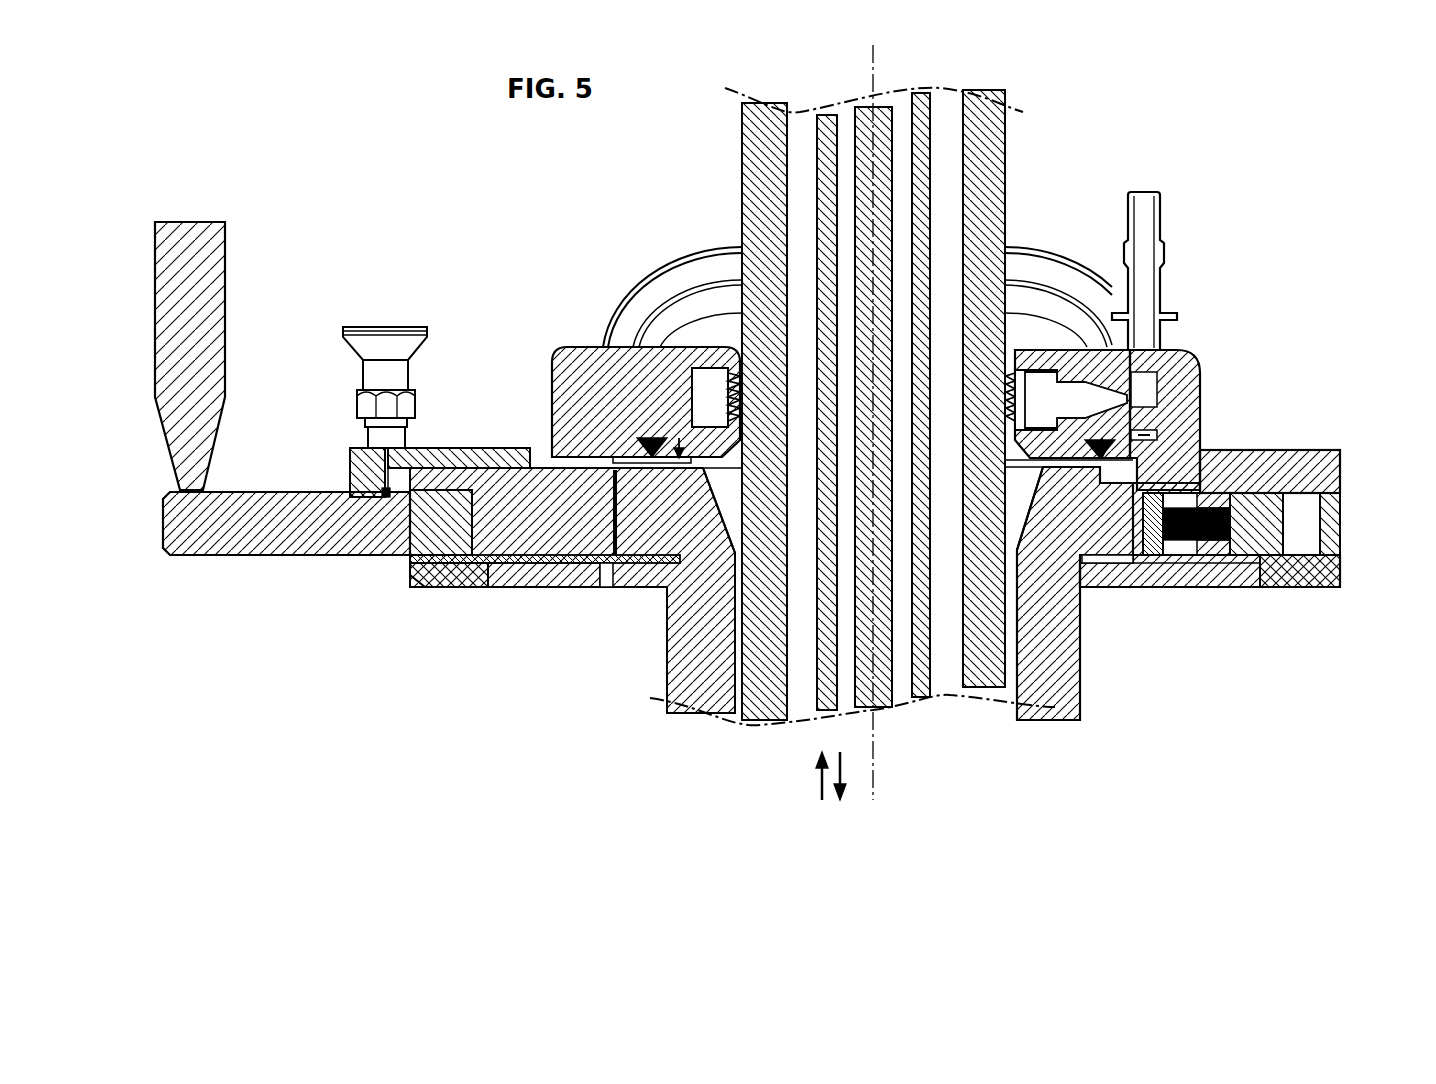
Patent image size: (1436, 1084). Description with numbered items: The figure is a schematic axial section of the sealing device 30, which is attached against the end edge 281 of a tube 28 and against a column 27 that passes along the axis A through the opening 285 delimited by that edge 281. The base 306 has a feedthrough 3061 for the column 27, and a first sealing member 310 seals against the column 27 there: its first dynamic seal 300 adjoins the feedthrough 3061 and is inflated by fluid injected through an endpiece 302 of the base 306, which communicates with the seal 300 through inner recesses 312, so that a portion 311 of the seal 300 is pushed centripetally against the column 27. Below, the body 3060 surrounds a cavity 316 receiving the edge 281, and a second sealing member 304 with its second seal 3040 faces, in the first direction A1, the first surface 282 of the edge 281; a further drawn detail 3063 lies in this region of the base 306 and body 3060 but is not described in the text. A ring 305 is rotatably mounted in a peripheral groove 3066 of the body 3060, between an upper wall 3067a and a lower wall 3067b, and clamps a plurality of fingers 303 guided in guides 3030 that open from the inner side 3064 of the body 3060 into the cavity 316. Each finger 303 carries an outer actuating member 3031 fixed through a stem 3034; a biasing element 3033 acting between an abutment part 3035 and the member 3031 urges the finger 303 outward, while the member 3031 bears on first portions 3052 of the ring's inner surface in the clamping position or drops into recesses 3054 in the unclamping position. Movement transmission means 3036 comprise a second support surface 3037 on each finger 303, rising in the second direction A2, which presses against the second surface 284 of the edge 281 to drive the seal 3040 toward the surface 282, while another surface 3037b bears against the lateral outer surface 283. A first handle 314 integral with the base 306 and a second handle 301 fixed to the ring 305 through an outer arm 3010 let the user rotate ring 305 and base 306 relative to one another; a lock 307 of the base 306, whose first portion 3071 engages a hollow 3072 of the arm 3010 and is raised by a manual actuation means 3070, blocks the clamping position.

The column 27 is at (1005, 200).
The tube 28 is at (1053, 690).
The sealing device 30 is at (1341, 470).
The end edge 281 is at (640, 492).
The first surface 282 is at (679, 436).
The lateral outer surface 283 is at (1137, 455).
The second surface 284 is at (622, 540).
The opening 285 is at (712, 494).
The first dynamic seal 300 is at (1045, 380).
The second handle 301 is at (205, 300).
The endpiece 302 is at (1164, 258).
The finger 303 is at (1105, 560).
The second sealing member 304 is at (642, 456).
The ring 305 is at (430, 530).
The base 306 is at (1212, 470).
The lock 307 is at (372, 454).
The first sealing member 310 is at (642, 362).
The portion of the first seal 311 is at (676, 322).
The inner recesses 312 is at (1110, 385).
The first handle 314 is at (696, 265).
The cavity 316 is at (650, 438).
The outer arm 3010 is at (258, 550).
The guide 3030 is at (1240, 472).
The outer actuating member 3031 is at (1266, 576).
The biasing element 3033 is at (1282, 472).
The stem 3034 is at (1197, 528).
The abutment part 3035 is at (1256, 556).
The movement transmission means 3036 is at (1158, 542).
The second support surface 3037 is at (1167, 584).
The other surface of the finger 3037b is at (1212, 548).
The second seal 3040 is at (1192, 400).
The first portions of the inner surface 3052 is at (1332, 572).
The recesses 3054 is at (1305, 520).
The body 3060 is at (510, 535).
The feedthrough 3061 is at (1015, 385).
The groove 3063 is at (640, 348).
The inner side 3064 is at (598, 562).
The peripheral groove 3066 is at (495, 590).
The upper wall 3067a is at (447, 466).
The lower wall 3067b is at (460, 580).
The manual actuation means 3070 is at (392, 348).
The first lock portion 3071 is at (386, 476).
The hollow 3072 is at (386, 498).
The axis A is at (875, 777).
The first direction A1 is at (848, 774).
The second direction A2 is at (815, 774).